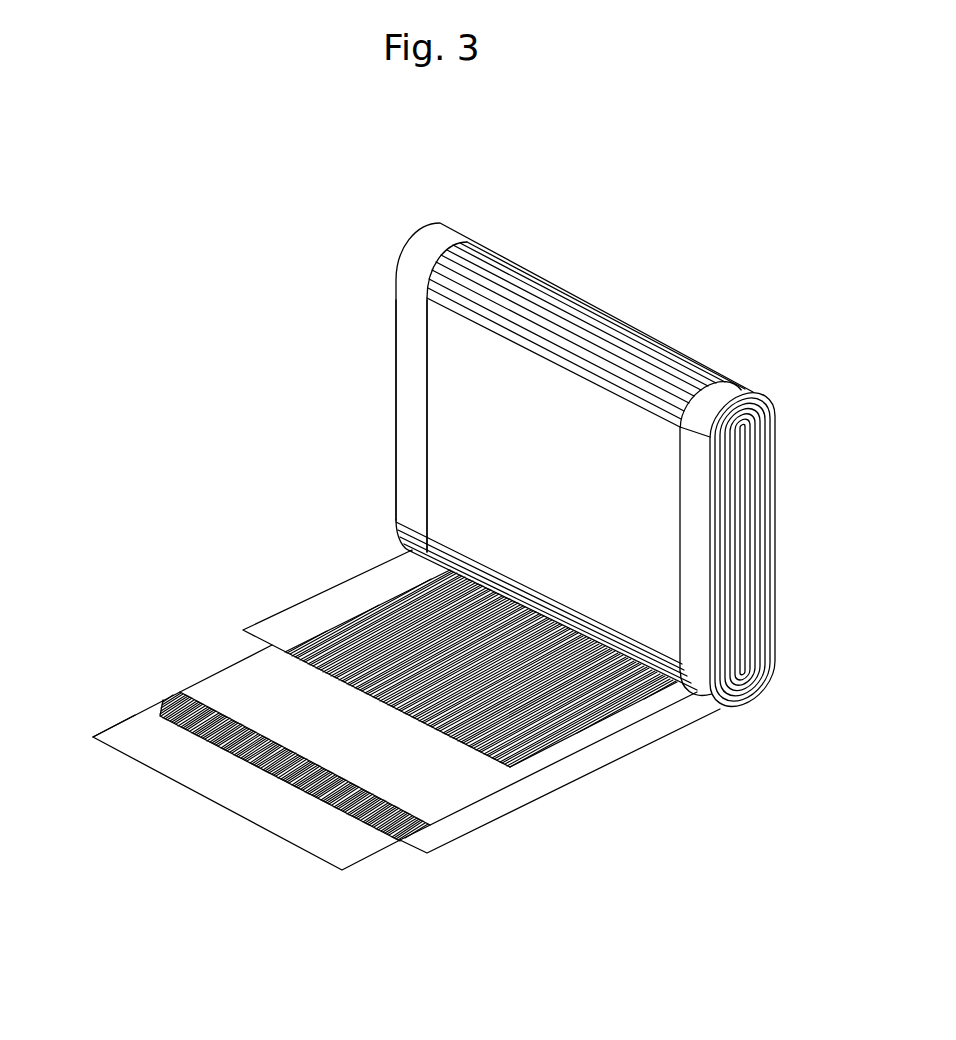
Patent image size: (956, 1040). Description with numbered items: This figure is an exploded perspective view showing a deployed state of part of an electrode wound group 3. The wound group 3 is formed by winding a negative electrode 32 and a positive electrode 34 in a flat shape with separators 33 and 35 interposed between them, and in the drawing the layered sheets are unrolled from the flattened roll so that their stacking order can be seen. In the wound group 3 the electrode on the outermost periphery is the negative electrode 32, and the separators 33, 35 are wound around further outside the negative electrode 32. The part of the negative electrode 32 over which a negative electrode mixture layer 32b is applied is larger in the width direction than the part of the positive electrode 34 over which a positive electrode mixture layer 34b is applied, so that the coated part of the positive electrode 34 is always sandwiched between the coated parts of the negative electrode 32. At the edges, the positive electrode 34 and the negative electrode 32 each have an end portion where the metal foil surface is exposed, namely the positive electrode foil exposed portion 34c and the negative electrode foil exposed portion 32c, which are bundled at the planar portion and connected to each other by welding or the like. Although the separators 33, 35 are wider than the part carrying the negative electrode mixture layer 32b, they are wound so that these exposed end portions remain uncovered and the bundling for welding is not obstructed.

The wound group 3 is at (568, 338).
The negative electrode 32 is at (283, 770).
The negative electrode mixture layer 32b is at (170, 702).
The negative electrode foil exposed portion 32c is at (698, 549).
The separator 33 is at (227, 668).
The positive electrode 34 is at (630, 692).
The positive electrode mixture layer 34b is at (580, 740).
The positive electrode foil exposed portion 34c is at (408, 391).
The separator 35 is at (115, 732).